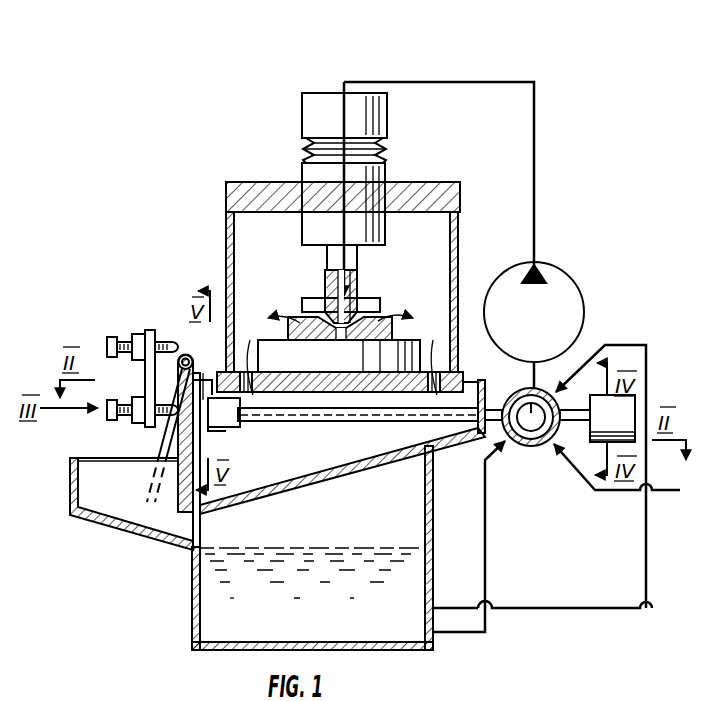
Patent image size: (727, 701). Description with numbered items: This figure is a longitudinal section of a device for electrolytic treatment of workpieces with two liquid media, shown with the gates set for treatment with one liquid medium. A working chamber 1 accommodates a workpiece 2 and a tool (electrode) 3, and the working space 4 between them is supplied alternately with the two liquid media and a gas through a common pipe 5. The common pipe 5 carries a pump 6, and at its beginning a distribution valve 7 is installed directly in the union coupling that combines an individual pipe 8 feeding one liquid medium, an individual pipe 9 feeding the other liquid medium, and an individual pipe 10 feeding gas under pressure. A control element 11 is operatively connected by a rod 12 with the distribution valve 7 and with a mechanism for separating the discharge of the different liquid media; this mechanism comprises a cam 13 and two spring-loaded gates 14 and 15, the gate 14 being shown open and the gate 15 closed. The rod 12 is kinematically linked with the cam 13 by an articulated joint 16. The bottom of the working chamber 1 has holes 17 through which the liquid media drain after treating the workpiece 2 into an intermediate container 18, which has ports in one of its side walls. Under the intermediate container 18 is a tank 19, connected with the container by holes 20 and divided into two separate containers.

The working chamber 1 is at (268, 218).
The workpiece 2 is at (378, 322).
The tool (electrode) 3 is at (362, 310).
The working space 4 is at (320, 340).
The common pipe 5 is at (531, 110).
The pump 6 is at (567, 292).
The distribution valve 7 is at (530, 450).
The individual pipe 8 is at (487, 542).
The individual pipe 9 is at (614, 345).
The individual pipe 10 is at (596, 492).
The control element 11 is at (632, 409).
The rod 12 is at (292, 412).
The cam 13 is at (148, 381).
The spring-loaded gate 14 is at (160, 447).
The spring-loaded gate 15 is at (176, 500).
The articulated joint 16 is at (229, 420).
The holes 17 is at (440, 390).
The intermediate container 18 is at (432, 464).
The tank 19 is at (434, 532).
The holes 20 is at (201, 528).